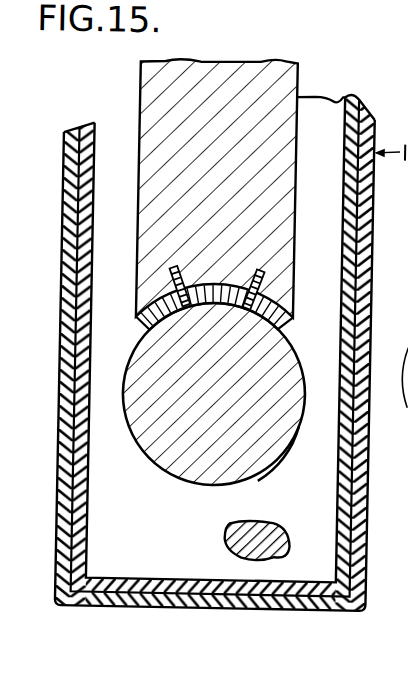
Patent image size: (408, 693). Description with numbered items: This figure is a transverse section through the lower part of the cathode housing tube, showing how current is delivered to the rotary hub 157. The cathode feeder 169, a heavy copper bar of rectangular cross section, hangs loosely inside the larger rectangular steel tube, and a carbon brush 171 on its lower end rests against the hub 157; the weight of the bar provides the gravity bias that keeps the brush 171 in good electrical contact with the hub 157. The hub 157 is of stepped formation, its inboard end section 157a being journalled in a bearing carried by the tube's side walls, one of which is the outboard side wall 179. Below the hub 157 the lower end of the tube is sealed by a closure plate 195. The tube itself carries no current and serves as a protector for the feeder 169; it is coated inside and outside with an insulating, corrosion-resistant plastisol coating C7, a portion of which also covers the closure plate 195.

The cathode feeder 169 is at (274, 64).
The outboard side wall 179 is at (328, 101).
The carbon brush 171 is at (285, 315).
The hub 157 is at (170, 461).
The inboard end section 157a is at (274, 467).
The closure plate 195 is at (237, 593).
The coating C7 is at (129, 579).